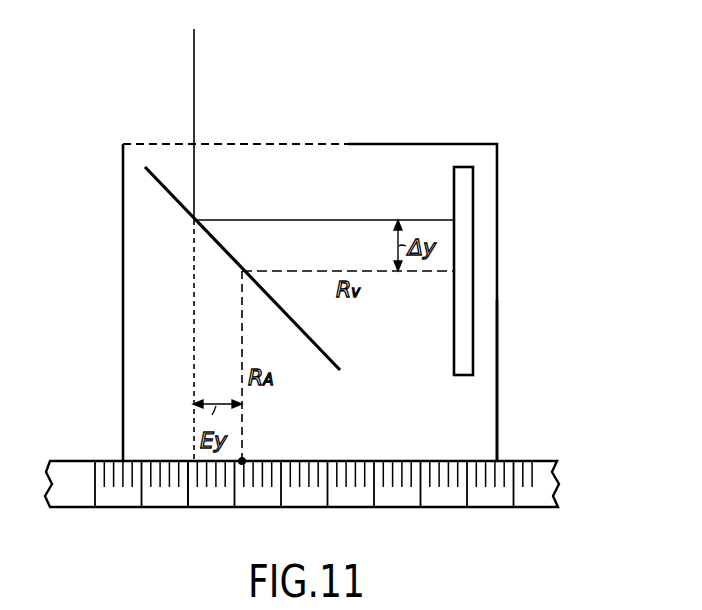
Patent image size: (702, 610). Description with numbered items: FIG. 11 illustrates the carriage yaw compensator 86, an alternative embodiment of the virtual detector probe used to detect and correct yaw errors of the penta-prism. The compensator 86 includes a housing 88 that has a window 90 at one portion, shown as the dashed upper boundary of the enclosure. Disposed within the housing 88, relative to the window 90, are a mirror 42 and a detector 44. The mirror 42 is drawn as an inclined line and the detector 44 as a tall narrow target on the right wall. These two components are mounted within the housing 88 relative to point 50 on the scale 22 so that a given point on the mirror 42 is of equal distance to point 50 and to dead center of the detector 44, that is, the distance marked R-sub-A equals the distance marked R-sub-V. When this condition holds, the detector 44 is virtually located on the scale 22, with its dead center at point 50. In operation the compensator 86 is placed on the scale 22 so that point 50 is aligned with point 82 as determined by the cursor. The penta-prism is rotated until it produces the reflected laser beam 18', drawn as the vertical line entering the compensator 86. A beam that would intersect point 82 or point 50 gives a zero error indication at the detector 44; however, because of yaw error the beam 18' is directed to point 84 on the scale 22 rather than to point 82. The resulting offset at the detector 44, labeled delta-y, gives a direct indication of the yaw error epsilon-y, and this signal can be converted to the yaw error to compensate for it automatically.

The reflected laser beam 18' is at (164, 245).
The window 90 is at (323, 143).
The carriage yaw compensator 86 is at (520, 175).
The detector 44 is at (454, 185).
The mirror 42 is at (335, 360).
The housing 88 is at (497, 413).
The point on the scale 84 is at (187, 460).
The point 50 is at (244, 460).
The point 82 is at (242, 463).
The scale 22 is at (540, 500).